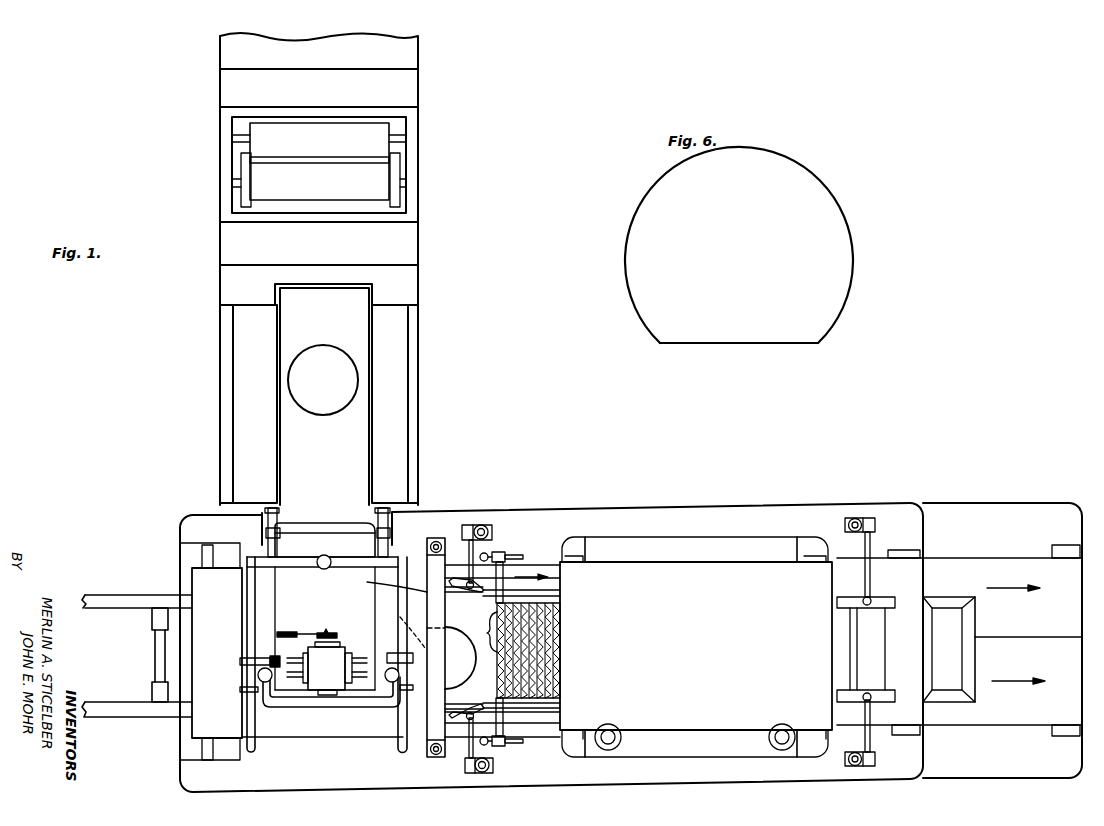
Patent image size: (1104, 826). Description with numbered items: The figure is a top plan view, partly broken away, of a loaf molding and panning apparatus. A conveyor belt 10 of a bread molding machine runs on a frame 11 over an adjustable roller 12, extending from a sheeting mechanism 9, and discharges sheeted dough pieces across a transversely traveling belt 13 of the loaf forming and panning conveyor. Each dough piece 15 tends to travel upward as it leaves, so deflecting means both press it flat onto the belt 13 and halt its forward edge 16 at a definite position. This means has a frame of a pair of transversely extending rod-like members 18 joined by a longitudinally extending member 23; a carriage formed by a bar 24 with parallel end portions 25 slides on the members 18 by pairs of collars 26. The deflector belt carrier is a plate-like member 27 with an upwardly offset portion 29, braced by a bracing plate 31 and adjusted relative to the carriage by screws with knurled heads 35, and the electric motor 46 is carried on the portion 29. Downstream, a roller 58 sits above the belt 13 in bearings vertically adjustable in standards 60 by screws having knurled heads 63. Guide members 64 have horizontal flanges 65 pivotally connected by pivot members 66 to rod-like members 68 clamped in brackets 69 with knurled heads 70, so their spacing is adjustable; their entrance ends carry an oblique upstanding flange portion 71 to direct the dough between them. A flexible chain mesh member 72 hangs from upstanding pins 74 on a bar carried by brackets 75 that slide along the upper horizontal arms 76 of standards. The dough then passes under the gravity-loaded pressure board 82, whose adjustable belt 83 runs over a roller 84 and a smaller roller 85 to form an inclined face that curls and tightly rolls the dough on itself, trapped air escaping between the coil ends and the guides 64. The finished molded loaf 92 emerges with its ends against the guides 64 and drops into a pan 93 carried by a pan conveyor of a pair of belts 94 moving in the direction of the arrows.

In FIG. 1, the sheeting mechanism 9 is at (375, 146).
In FIG. 1, the conveyor belt 10 is at (285, 443).
In FIG. 1, the frame 11 is at (238, 363).
In FIG. 1, the roller 12 is at (368, 527).
In FIG. 1, the belt 13 is at (527, 567).
In FIG. 1, the dough piece 15 is at (337, 368).
In FIG. 6, the dough piece 15 is at (643, 253).
In FIG. 1, the forward edge 16 is at (452, 687).
In FIG. 6, the forward edge 16 is at (740, 346).
In FIG. 1, the rod-like members 18 is at (250, 630).
In FIG. 1, the longitudinally extending member 23 is at (303, 568).
In FIG. 1, the bar or rod-like member 24 is at (316, 708).
In FIG. 1, the transversely extending end portions 25 is at (270, 660).
In FIG. 1, the collars 26 is at (240, 663).
In FIG. 1, the plate-like member 27 is at (312, 528).
In FIG. 1, the upwardly offset portion 29 is at (297, 692).
In FIG. 1, the bracing plate 31 is at (285, 605).
In FIG. 1, the knurled heads 35 is at (258, 675).
In FIG. 1, the electric motor 46 is at (328, 672).
In FIG. 1, the roller 58 is at (427, 582).
In FIG. 1, the standards 60 is at (446, 540).
In FIG. 1, the knurled heads 63 is at (434, 540).
In FIG. 1, the guide members 64 is at (560, 592).
In FIG. 1, the horizontal flanges 65 is at (487, 588).
In FIG. 1, the pivot members 66 is at (872, 600).
In FIG. 1, the rod-like members 68 is at (468, 760).
In FIG. 1, the brackets 69 is at (490, 528).
In FIG. 1, the knurled heads 70 is at (482, 525).
In FIG. 1, the oblique upstanding flange portion 71 is at (410, 752).
In FIG. 1, the flexible chain mesh member 72 is at (561, 646).
In FIG. 1, the upstanding pins 74 is at (487, 630).
In FIG. 1, the brackets 75 is at (502, 552).
In FIG. 1, the upper horizontal arms 76 is at (503, 562).
In FIG. 1, the pressure board 82 is at (720, 550).
In FIG. 1, the belt 83 is at (650, 592).
In FIG. 1, the roller 84 is at (812, 555).
In FIG. 1, the smaller roller 85 is at (574, 560).
In FIG. 1, the molded loaf 92 is at (857, 640).
In FIG. 1, the pan 93 is at (958, 633).
In FIG. 1, the belts 94 is at (983, 570).